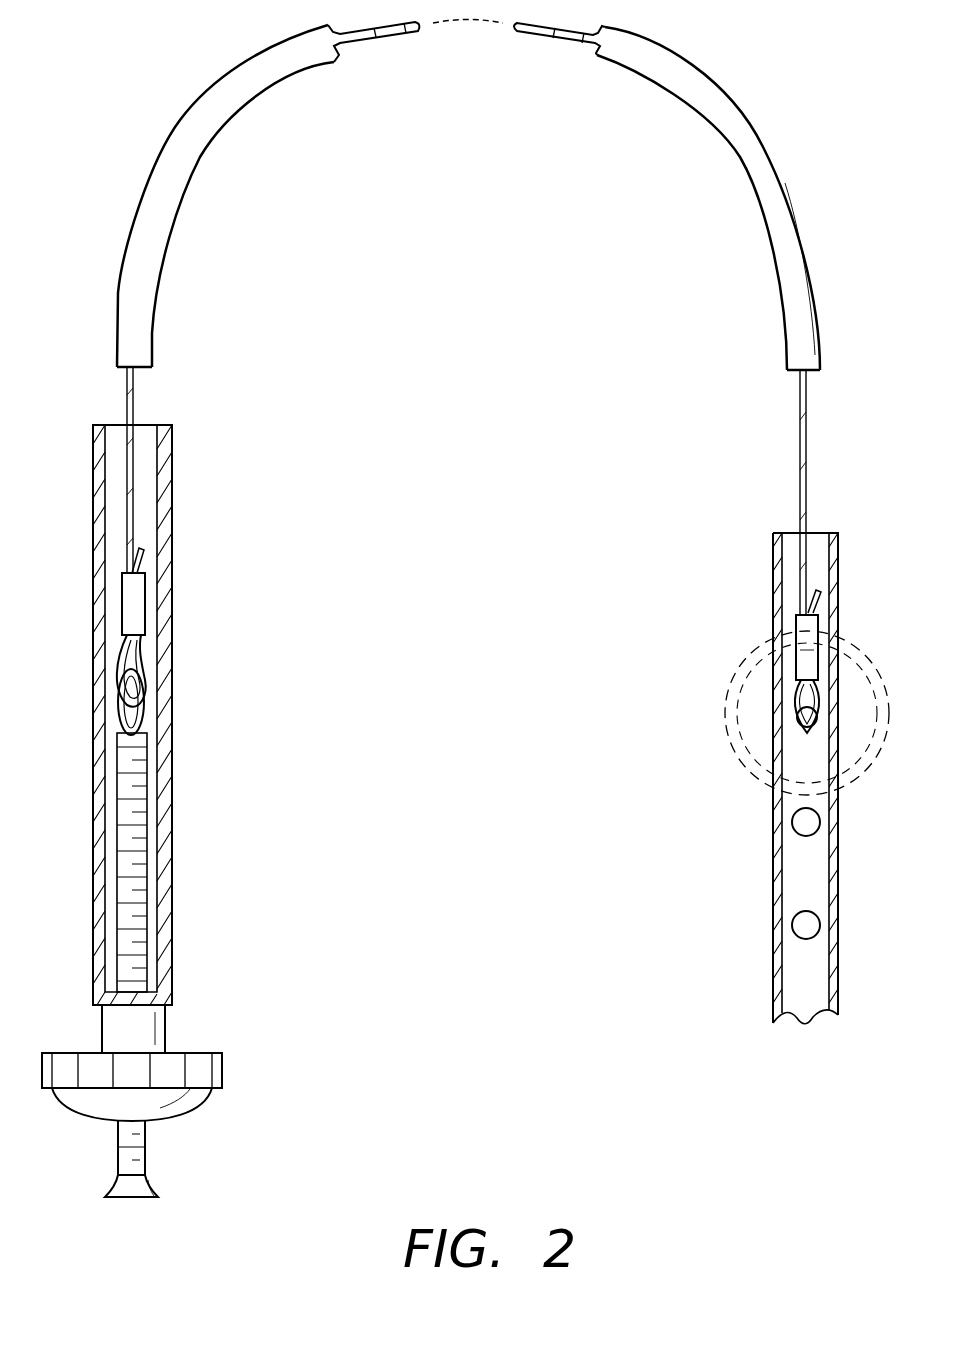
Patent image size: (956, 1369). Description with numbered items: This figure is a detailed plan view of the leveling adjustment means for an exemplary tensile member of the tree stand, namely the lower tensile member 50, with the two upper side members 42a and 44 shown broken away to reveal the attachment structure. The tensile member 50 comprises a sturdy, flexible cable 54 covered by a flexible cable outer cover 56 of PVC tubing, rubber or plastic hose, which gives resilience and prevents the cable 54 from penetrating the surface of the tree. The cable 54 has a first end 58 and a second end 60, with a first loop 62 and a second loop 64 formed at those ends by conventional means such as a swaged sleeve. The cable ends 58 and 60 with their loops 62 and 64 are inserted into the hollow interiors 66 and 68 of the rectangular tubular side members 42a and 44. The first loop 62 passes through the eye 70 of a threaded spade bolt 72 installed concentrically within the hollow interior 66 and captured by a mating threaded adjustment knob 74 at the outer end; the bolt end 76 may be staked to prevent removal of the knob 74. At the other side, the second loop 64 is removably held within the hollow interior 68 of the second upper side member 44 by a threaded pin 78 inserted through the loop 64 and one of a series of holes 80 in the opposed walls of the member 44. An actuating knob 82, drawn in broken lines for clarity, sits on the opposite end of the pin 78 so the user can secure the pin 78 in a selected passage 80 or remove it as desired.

The upper side member 42a is at (188, 739).
The second upper side member 44 is at (761, 755).
The lower tensile member 50 is at (572, 157).
The cable 54 is at (135, 400).
The cable outer cover 56 is at (170, 230).
The first end 58 is at (135, 538).
The second end 60 is at (800, 580).
The first loop 62 is at (145, 663).
The second loop 64 is at (795, 700).
The hollow interior 66 is at (148, 466).
The hollow interior 68 is at (792, 532).
The eye 70 is at (148, 706).
The threaded spade bolt 72 is at (147, 882).
The adjustment knob 74 is at (222, 1073).
The bolt end 76 is at (160, 1196).
The pin 78 is at (800, 717).
The holes 80 is at (795, 836).
The actuating knob 82 is at (729, 765).